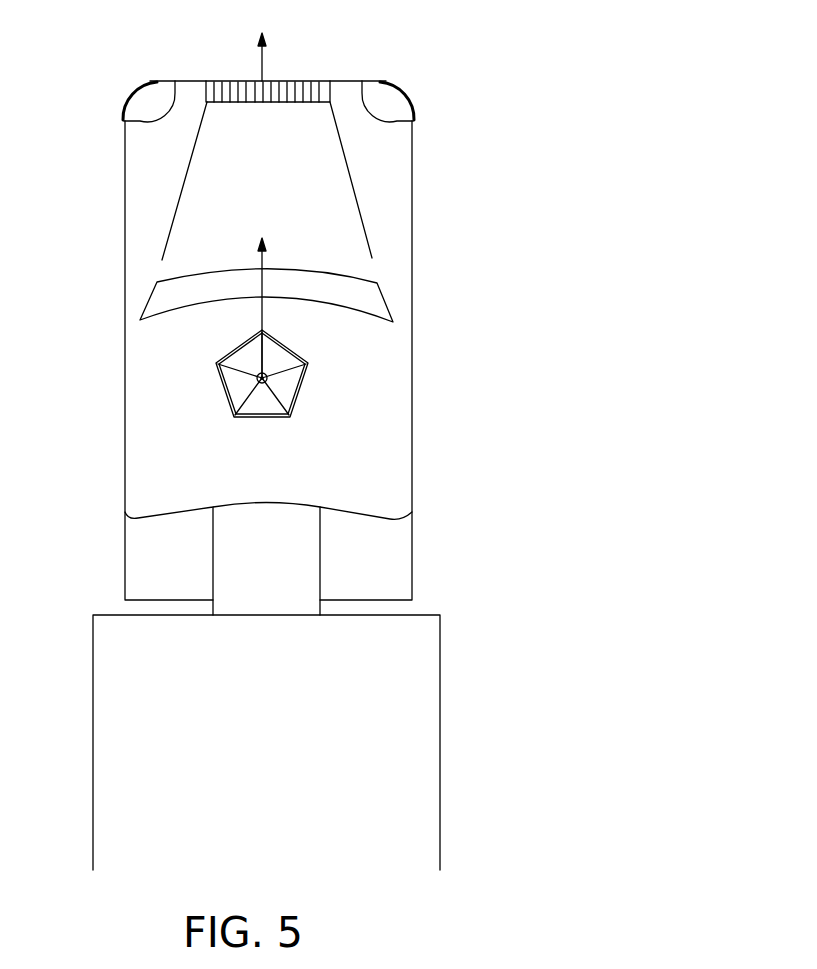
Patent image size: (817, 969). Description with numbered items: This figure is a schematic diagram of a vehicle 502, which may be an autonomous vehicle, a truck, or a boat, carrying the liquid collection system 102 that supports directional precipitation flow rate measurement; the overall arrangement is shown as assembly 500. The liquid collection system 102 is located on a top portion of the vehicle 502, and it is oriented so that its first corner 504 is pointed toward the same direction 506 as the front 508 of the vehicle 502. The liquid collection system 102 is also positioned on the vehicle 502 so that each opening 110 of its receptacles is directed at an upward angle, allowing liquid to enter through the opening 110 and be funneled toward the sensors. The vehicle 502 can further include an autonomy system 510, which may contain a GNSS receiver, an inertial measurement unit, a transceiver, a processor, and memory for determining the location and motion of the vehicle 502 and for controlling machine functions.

The lighting assembly 500 is at (437, 461).
The vehicle 502 is at (412, 208).
The first corner 504 is at (263, 330).
The direction 506 is at (264, 58).
The front 508 is at (347, 81).
The autonomy system 510 is at (320, 558).
The liquid collection system 102 is at (283, 389).
The opening 110 is at (288, 388).